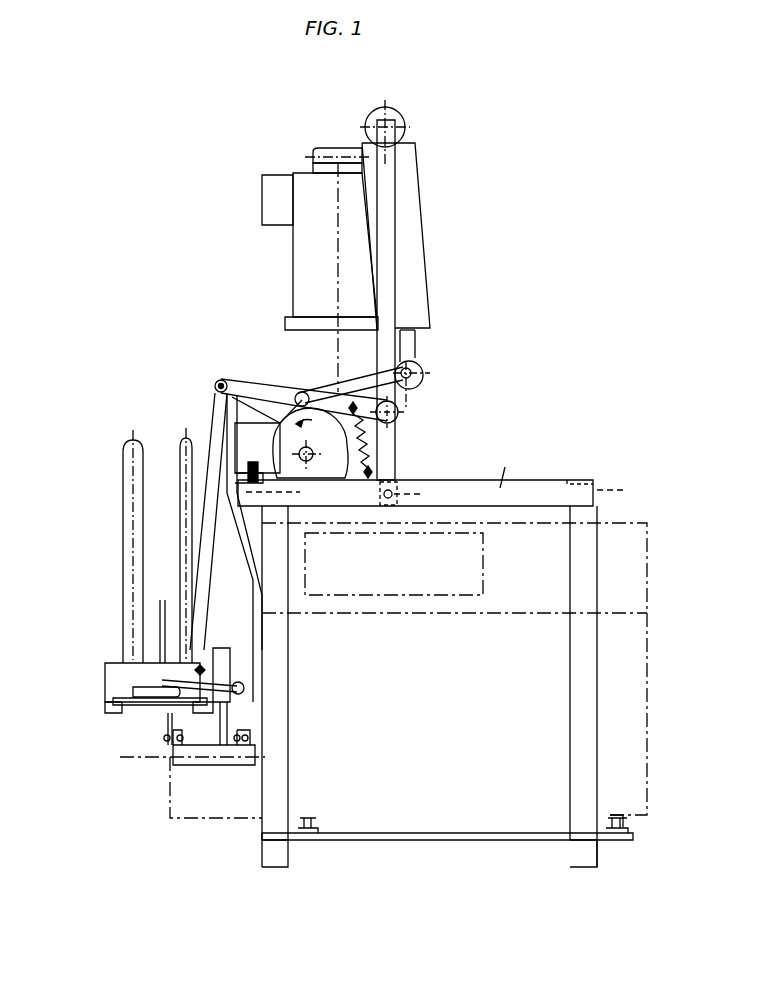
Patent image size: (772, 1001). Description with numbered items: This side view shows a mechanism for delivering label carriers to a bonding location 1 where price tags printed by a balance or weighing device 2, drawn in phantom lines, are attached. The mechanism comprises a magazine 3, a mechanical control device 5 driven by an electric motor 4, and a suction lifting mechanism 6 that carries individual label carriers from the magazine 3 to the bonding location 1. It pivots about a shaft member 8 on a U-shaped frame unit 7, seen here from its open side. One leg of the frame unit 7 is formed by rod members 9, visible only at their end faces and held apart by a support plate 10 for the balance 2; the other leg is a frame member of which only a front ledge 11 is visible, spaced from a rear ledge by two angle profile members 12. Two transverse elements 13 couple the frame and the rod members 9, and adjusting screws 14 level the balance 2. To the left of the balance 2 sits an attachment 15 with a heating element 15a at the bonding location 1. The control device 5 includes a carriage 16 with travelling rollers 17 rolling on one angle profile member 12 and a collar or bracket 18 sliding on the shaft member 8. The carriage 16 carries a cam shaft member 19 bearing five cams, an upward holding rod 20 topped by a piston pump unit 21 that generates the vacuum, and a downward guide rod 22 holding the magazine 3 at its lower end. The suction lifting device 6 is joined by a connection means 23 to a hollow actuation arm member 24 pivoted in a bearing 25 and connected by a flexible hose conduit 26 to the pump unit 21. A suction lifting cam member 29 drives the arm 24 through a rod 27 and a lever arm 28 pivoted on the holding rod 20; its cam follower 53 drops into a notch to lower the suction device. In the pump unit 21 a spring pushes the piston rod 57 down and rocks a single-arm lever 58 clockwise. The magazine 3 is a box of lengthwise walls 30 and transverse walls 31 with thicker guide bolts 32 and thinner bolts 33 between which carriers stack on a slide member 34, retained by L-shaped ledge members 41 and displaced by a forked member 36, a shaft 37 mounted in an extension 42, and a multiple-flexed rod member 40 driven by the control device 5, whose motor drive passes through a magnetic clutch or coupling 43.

The bonding location 1 is at (181, 785).
The balance or weighing device 2 is at (647, 655).
The magazine 3 is at (108, 640).
The electric motor 4 is at (303, 262).
The mechanical control device 5 is at (262, 375).
The suction lifting mechanism 6 is at (130, 692).
The U-shaped frame unit 7 is at (533, 469).
The shaft member 8 is at (392, 493).
The rod members 9 is at (282, 853).
The support plate 10 is at (426, 840).
The front ledge 11 is at (508, 464).
The angle profile members 12 is at (449, 492).
The transverse elements 13 is at (278, 744).
The adjusting screws 14 is at (315, 818).
The attachment 15 is at (240, 804).
The heating element 15a is at (193, 773).
The carriage 16 is at (221, 380).
The travelling rollers 17 is at (250, 463).
The collar or bracket 18 is at (414, 494).
The cam shaft member 19 is at (312, 455).
The retaining or holding rod 20 is at (386, 181).
The piston pump unit 21 is at (414, 222).
The guide rod 22 is at (235, 583).
The connection means 23 is at (158, 640).
The actuation arm member 24 is at (200, 668).
The bearing 25 is at (240, 688).
The flexible hose conduit 26 is at (345, 150).
The rod 27 is at (210, 497).
The lever arm 28 is at (272, 387).
The suction lifting cam member 29 is at (345, 438).
The lengthwise walls 30 is at (110, 665).
The transverse walls 31 is at (125, 680).
The thicker bolt or rod members 32 is at (125, 487).
The thinner rod or bolt members 33 is at (182, 462).
The slide member 34 is at (128, 714).
The bifurcated or forked member 36 is at (165, 712).
The shaft 37 is at (172, 753).
The multiple-flexed rod member 40 is at (233, 547).
The ledge members 41 is at (120, 706).
The extension 42 is at (226, 722).
The magnetic clutch or coupling 43 is at (365, 364).
The cam follower 53 is at (305, 395).
The piston rod 57 is at (413, 345).
The single-arm lever 58 is at (411, 372).